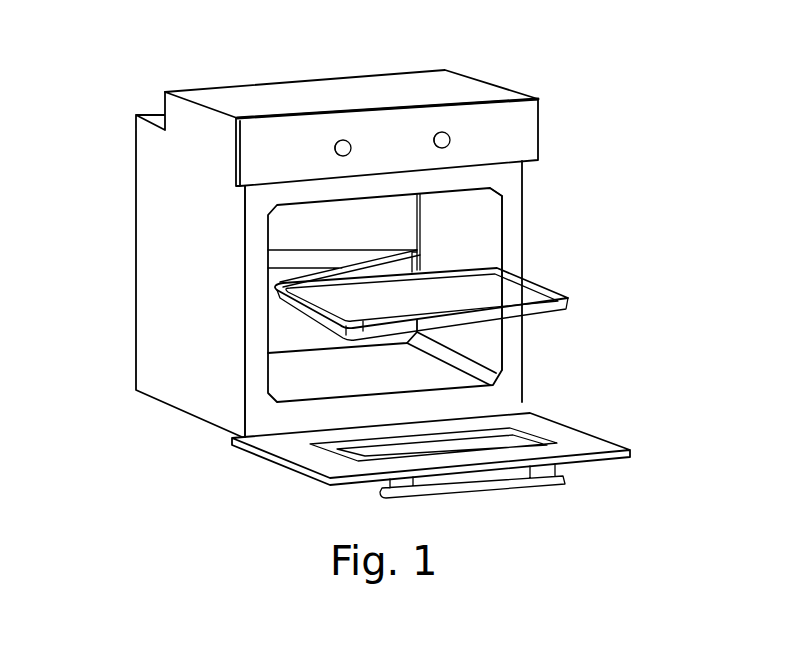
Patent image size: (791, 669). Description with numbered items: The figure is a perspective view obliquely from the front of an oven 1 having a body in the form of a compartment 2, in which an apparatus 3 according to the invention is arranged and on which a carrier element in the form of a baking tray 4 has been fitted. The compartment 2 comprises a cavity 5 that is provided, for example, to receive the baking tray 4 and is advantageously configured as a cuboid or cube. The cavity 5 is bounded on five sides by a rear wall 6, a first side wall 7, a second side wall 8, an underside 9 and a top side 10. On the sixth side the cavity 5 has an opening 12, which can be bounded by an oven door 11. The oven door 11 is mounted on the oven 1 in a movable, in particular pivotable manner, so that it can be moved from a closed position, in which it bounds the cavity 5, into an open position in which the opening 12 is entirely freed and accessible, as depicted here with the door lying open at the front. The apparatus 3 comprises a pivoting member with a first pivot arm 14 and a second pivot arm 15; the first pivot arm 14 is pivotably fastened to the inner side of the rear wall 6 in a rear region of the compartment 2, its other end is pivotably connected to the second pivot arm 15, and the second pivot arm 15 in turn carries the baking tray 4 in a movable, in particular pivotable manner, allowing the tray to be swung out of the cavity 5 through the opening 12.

The oven 1 is at (131, 404).
The compartment 2 is at (268, 412).
The apparatus 3 is at (454, 238).
The baking tray 4 is at (580, 291).
The cavity 5 is at (486, 354).
The rear wall 6 is at (397, 222).
The first side wall 7 is at (283, 347).
The second side wall 8 is at (500, 342).
The underside 9 is at (320, 373).
The top side 10 is at (322, 220).
The oven door 11 is at (597, 440).
The opening 12 is at (501, 250).
The first pivot arm 14 is at (290, 258).
The second pivot arm 15 is at (400, 267).